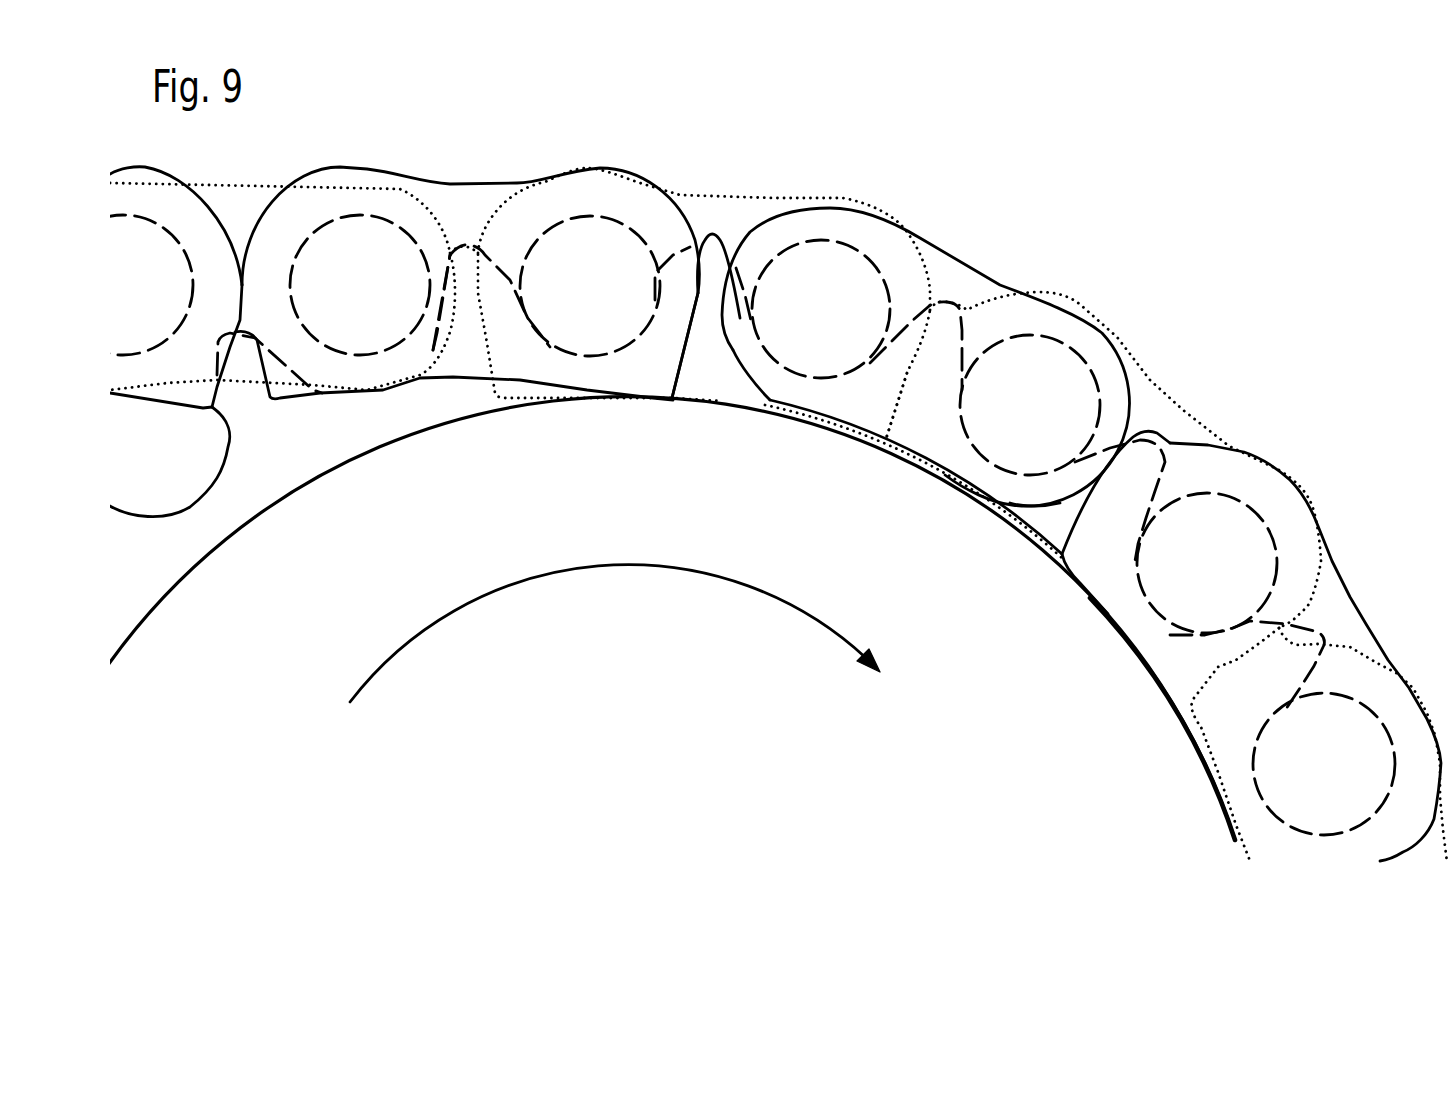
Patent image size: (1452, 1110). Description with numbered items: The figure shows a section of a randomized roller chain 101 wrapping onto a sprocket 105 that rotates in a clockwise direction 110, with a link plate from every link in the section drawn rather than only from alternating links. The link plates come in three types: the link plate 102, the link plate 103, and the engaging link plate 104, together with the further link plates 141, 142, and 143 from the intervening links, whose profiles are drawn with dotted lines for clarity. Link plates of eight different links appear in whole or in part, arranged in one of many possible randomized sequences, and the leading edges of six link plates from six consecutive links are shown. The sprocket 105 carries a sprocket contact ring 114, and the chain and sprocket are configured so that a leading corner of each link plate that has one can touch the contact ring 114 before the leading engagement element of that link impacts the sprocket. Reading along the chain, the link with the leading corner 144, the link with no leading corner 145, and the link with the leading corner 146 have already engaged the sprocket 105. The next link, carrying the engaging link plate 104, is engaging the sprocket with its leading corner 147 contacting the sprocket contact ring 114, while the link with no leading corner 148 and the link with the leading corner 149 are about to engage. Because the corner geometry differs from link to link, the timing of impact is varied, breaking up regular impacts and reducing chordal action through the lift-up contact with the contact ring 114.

The randomized roller chain 101 is at (1135, 145).
The link plate 102 is at (177, 178).
The link plate 103 is at (1000, 278).
The engaging link plate 104 is at (447, 182).
The sprocket 105 is at (677, 732).
The clockwise direction 110 is at (619, 633).
The sprocket contact ring 114 is at (150, 612).
The link plate 141 is at (1355, 650).
The link plate 142 is at (718, 195).
The link plate 143 is at (255, 187).
The leading corner 144 is at (1177, 712).
The no leading corner 145 is at (1035, 507).
The leading corner 146 is at (882, 443).
The leading corner 147 is at (673, 400).
The no leading corner 148 is at (437, 345).
The leading corner 149 is at (227, 423).